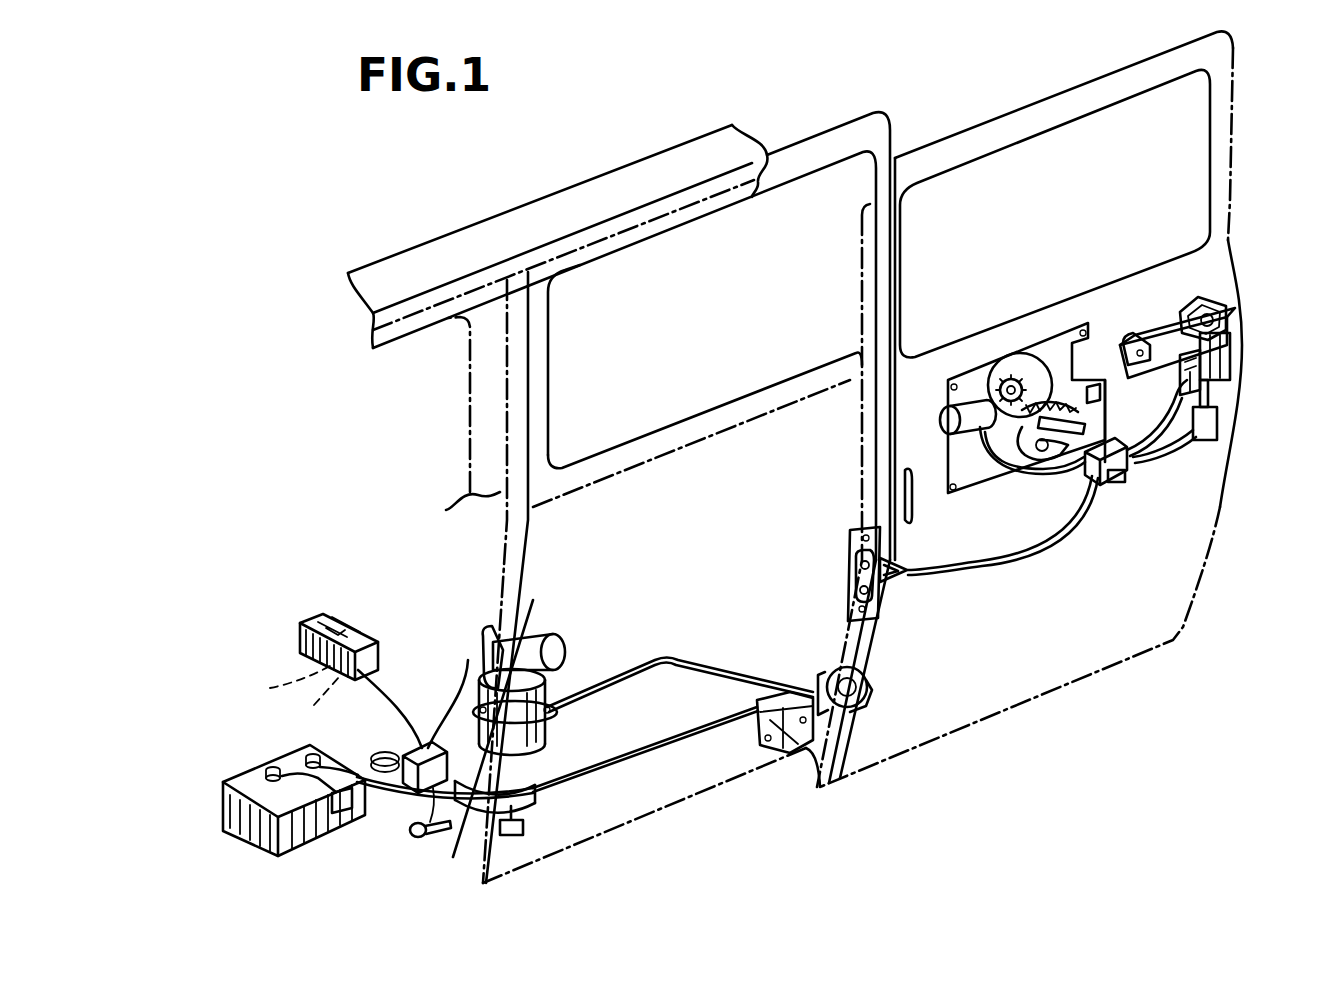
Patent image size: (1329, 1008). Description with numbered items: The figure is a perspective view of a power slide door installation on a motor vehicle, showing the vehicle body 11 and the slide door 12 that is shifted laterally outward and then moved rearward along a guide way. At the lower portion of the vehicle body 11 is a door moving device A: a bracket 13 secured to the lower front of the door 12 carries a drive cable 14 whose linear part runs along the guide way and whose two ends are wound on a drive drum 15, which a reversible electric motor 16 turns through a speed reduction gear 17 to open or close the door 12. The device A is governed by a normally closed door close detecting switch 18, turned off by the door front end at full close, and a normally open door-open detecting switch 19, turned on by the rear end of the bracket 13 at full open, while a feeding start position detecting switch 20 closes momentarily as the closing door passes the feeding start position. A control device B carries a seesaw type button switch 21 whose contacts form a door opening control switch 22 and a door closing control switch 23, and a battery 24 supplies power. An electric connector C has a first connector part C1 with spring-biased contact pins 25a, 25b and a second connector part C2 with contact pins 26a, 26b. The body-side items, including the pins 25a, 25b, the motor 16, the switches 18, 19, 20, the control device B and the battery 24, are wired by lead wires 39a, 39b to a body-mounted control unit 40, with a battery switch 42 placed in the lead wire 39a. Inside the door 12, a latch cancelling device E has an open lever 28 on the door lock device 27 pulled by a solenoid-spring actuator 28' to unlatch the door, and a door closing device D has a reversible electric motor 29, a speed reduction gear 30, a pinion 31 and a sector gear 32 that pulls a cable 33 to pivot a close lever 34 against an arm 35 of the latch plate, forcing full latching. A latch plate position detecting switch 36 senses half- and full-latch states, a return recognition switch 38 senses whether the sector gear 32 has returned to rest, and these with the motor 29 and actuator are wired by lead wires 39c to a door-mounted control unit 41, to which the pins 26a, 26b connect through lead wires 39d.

The vehicle body 11 is at (486, 232).
The slide door 12 is at (1184, 578).
The bracket 13 is at (776, 740).
The drive cable 14 is at (643, 746).
The drive drum 15 is at (548, 736).
The reversible electric motor 16 is at (566, 652).
The speed reduction gear 17 is at (556, 684).
The door close detecting switch 18 is at (432, 842).
The door-open detecting switch 19 is at (866, 690).
The feeding start position detecting switch 20 is at (525, 828).
The seesaw type button switch 21 is at (356, 632).
The door opening control switch 22 is at (283, 682).
The door closing control switch 23 is at (314, 699).
The battery 24 is at (255, 840).
The contact pin 25a is at (497, 640).
The contact pin 25b is at (548, 642).
The contact pin 26a is at (849, 568).
The contact pin 26b is at (848, 590).
The door lock device 27 is at (1224, 392).
The open lever 28 is at (1204, 343).
The solenoid-spring combination type actuator 28' is at (1249, 421).
The reversible electric motor 29 is at (949, 408).
The speed reduction gear 30 is at (1001, 360).
The pinion 31 is at (1015, 378).
The sector gear 32 is at (1045, 420).
The cable 33 is at (1098, 384).
The close lever 34 is at (1230, 330).
The arm 35 is at (1226, 312).
The latch plate position detecting switch 36 is at (1180, 440).
The return recognition switch 38 is at (1098, 486).
The lead wire 39a is at (368, 806).
The lead wire 39b is at (418, 740).
The lead wires 39c is at (1128, 464).
The lead wires 39d is at (1046, 546).
The body-mounted control unit 40 is at (418, 795).
The door-mounted control unit 41 is at (1120, 484).
The battery switch 42 is at (338, 812).
The door moving device A is at (591, 612).
The control device B is at (300, 644).
The electric connector C is at (466, 624).
The first connector part C1 is at (464, 650).
The second connector part C2 is at (850, 560).
The door closing device D is at (976, 358).
The latch cancelling device E is at (1226, 441).